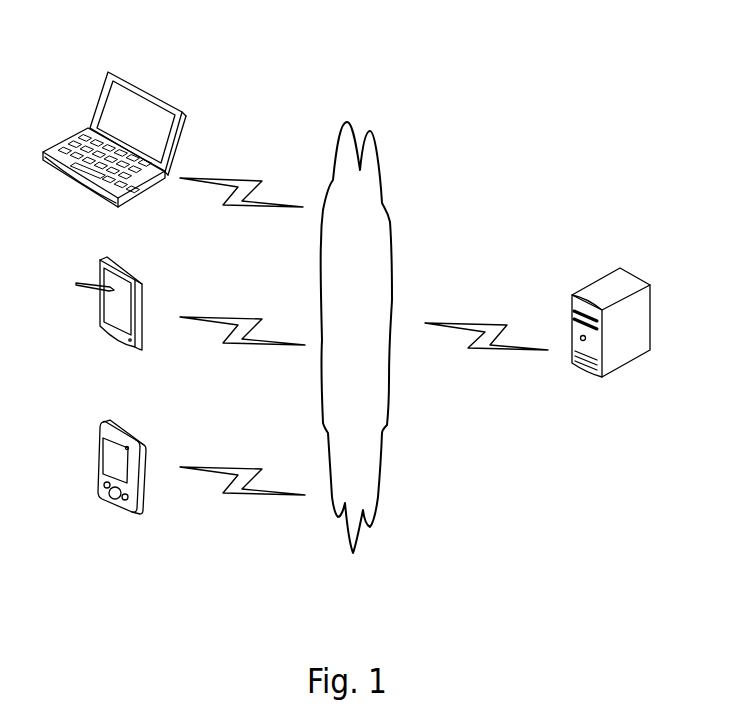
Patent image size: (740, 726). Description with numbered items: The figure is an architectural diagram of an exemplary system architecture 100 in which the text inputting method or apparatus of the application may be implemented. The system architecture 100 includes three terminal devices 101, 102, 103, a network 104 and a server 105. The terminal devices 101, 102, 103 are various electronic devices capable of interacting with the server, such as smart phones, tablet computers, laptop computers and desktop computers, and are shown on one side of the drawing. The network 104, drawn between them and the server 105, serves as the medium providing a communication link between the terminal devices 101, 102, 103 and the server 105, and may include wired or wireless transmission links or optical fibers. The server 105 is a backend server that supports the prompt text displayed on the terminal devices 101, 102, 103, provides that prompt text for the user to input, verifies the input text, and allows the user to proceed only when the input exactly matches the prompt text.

The system architecture 100 is at (538, 45).
The terminal device 101 is at (122, 481).
The terminal device 102 is at (109, 320).
The terminal device 103 is at (114, 156).
The network 104 is at (356, 337).
The server 105 is at (611, 338).